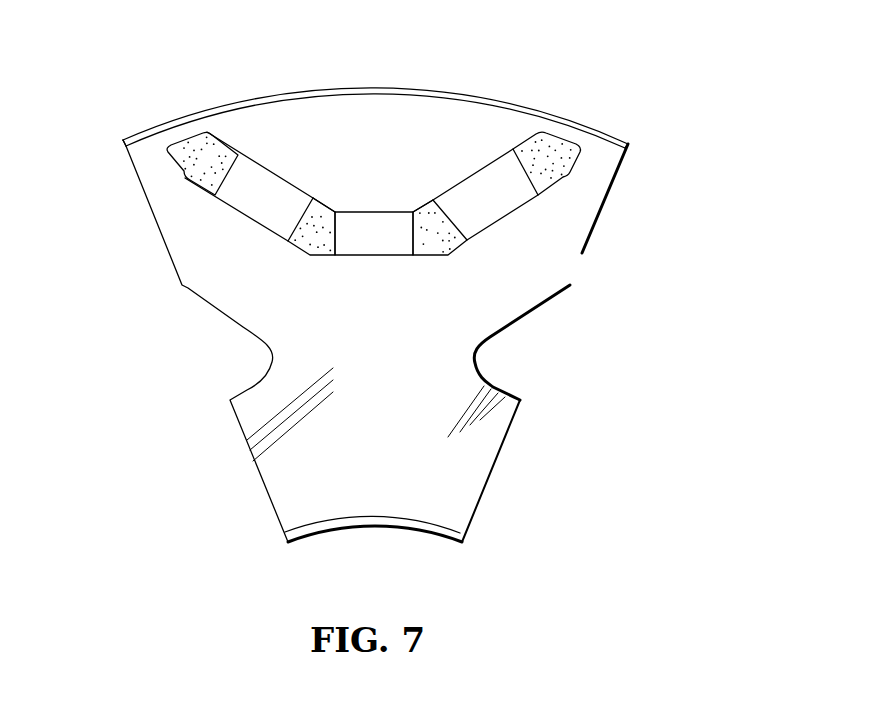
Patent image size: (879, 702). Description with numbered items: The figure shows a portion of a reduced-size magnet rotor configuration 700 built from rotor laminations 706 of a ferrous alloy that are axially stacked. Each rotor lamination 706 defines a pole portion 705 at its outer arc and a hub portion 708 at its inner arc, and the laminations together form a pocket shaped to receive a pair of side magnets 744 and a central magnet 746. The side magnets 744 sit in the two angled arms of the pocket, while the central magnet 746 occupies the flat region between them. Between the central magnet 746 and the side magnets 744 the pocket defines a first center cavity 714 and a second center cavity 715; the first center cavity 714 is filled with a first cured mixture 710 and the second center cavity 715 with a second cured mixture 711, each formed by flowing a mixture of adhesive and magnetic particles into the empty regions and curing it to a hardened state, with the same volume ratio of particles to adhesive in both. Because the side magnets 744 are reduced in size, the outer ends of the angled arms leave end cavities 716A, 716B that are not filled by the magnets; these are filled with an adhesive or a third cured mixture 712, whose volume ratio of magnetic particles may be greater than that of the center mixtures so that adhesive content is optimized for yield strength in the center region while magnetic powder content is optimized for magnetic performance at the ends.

The rotor configuration 700 is at (612, 68).
The pole portion 705 is at (386, 125).
The rotor laminations 706 is at (448, 473).
The hub portion 708 is at (375, 510).
The first cured mixture 710 is at (442, 237).
The second cured mixture 711 is at (311, 256).
The third cured mixture 712 is at (198, 160).
The first center cavity 714 is at (418, 203).
The second center cavity 715 is at (328, 207).
The end cavity 716A is at (562, 140).
The end cavity 716B is at (189, 142).
The side magnets 744 is at (250, 223).
The central magnet 746 is at (376, 256).